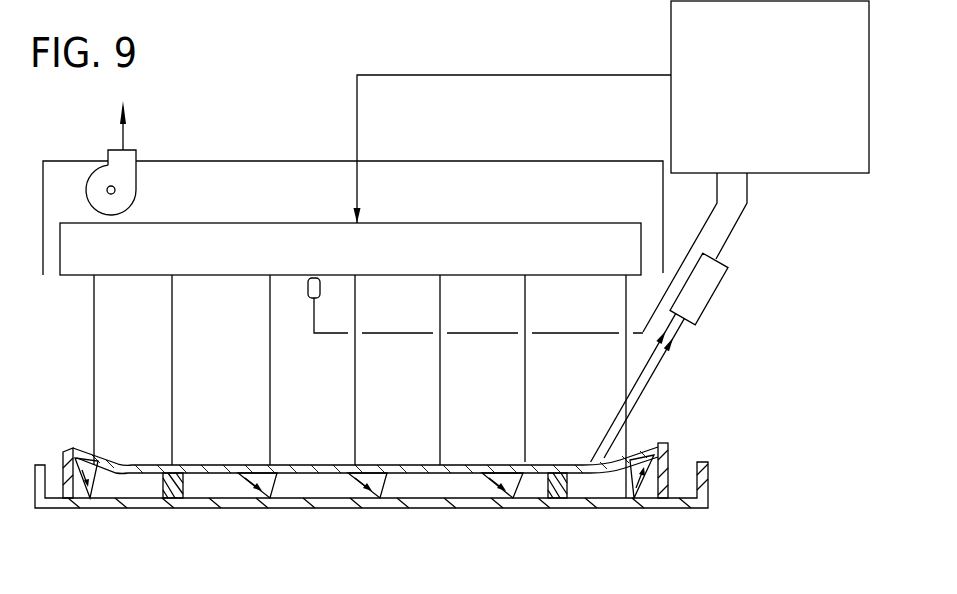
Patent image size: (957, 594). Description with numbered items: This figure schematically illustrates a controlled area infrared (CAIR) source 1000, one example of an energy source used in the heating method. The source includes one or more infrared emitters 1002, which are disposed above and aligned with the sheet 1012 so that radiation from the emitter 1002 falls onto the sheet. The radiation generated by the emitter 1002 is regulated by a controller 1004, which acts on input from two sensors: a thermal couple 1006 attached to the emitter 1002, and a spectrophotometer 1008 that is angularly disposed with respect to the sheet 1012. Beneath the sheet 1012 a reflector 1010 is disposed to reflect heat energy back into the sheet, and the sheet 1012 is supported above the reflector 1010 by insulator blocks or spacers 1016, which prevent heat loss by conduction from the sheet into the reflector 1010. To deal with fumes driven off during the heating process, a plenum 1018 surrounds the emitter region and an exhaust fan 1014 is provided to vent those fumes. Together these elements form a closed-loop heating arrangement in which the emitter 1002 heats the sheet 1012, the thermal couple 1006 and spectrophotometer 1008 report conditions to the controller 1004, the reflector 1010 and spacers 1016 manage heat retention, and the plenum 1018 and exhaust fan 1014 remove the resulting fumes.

The controlled area infrared (CAIR) source 1000 is at (342, 72).
The infrared emitter 1002 is at (400, 263).
The controller 1004 is at (803, 99).
The thermal couple 1006 is at (307, 292).
The spectrophotometer 1008 is at (708, 290).
The reflector 1010 is at (399, 497).
The sheet 1012 is at (400, 465).
The exhaust fan 1014 is at (125, 198).
The insulator blocks or spacers 1016 is at (172, 499).
The plenum 1018 is at (278, 159).